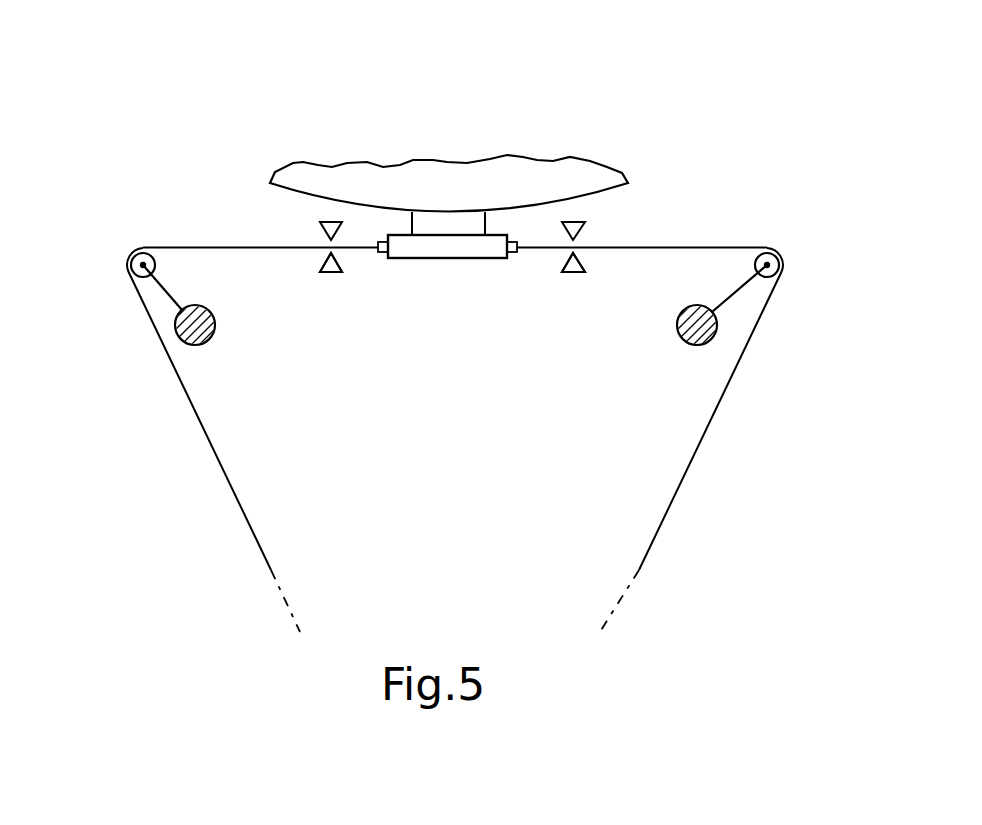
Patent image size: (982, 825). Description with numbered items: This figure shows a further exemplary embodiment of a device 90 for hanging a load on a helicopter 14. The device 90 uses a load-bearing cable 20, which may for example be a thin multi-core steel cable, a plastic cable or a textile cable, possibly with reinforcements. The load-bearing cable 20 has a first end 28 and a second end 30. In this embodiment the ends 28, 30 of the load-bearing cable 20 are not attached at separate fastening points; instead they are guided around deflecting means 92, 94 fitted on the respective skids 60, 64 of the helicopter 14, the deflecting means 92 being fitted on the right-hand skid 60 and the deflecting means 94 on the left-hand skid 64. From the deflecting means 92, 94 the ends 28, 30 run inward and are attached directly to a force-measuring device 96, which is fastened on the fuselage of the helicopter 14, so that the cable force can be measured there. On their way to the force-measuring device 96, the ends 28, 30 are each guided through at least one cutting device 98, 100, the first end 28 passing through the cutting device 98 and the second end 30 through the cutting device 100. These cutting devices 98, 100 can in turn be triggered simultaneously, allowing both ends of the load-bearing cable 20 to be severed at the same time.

The device 90 is at (208, 193).
The helicopter 14 is at (517, 188).
The force-measuring device 96 is at (447, 243).
The load-bearing cable 20 is at (230, 478).
The first end 28 is at (357, 248).
The second end 30 is at (537, 248).
The cutting device 98 is at (323, 270).
The cutting device 100 is at (575, 268).
The deflecting means 92 is at (135, 277).
The deflecting means 94 is at (780, 265).
The right-hand skid 60 is at (175, 340).
The left-hand skid 64 is at (675, 340).